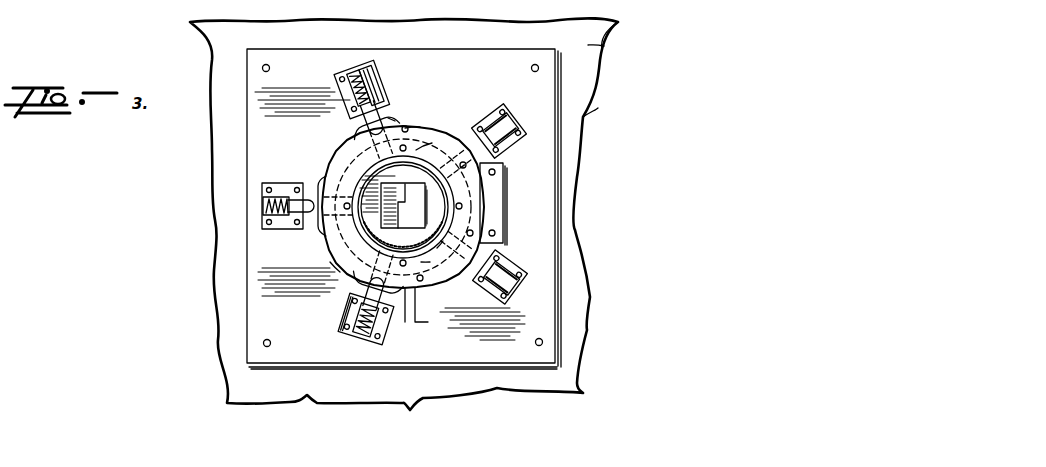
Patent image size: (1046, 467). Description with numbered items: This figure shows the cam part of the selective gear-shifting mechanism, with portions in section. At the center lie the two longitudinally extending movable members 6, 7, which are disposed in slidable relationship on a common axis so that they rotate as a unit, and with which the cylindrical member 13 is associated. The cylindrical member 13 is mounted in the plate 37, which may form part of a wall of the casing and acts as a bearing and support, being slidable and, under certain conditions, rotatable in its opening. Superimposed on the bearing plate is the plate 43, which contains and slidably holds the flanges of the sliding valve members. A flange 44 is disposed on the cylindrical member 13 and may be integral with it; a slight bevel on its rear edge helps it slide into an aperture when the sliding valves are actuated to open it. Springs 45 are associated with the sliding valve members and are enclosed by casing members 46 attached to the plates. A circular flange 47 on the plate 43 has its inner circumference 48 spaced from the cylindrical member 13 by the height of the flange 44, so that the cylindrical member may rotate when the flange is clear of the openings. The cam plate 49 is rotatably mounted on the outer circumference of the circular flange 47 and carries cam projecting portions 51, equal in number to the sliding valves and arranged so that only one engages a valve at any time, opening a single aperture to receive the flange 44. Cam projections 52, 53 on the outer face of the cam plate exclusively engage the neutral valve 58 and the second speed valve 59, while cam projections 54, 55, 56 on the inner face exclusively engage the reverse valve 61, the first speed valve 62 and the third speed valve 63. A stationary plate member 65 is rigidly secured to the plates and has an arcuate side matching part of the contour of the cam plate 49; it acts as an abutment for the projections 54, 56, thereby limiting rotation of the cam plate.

The plate 37 is at (604, 46).
The superimposed plate 43 is at (545, 90).
The casing member 46 is at (380, 70).
The spring 45 is at (358, 70).
The cam projecting portion 51 is at (346, 132).
The sliding valve 58 is at (388, 118).
The cam projection 54 is at (405, 128).
The inner circumference 48 is at (416, 150).
The sliding valve 61 is at (463, 150).
The stationary plate member 65 is at (497, 192).
The movable member 6 is at (410, 208).
The sliding valve 63 is at (485, 262).
The movable member 7 is at (396, 201).
The cam plate 49 is at (352, 185).
The cam projection 52 is at (340, 150).
The sliding valve 62 is at (292, 227).
The cam projection 55 is at (314, 216).
The cam projection 53 is at (330, 266).
The flange 44 is at (337, 310).
The cam projection 56 is at (405, 322).
The sliding valve 59 is at (355, 333).
The cylindrical member 13 is at (421, 262).
The circular flange 47 is at (437, 248).